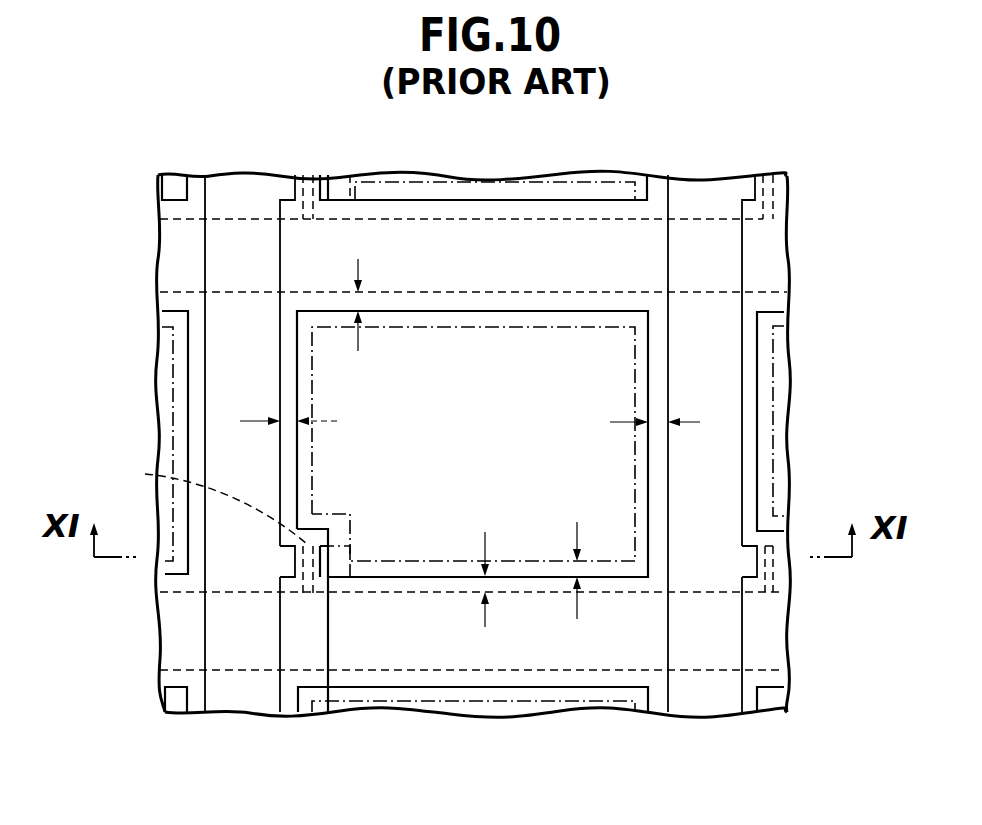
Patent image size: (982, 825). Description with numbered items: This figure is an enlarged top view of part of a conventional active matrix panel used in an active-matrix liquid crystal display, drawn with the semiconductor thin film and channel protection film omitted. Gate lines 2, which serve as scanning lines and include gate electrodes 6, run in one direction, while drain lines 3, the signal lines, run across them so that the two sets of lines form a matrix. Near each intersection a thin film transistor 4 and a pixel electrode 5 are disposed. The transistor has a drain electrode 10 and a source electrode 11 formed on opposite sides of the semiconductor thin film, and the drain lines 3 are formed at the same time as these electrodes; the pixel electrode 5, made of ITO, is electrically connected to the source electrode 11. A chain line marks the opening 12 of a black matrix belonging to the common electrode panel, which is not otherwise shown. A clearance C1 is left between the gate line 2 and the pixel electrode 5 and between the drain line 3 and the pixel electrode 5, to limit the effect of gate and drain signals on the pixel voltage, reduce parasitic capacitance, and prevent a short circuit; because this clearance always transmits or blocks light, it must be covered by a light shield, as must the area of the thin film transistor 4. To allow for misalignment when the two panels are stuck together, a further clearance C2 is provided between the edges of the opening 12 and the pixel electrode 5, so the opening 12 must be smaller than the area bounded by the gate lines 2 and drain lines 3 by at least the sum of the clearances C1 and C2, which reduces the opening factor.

The gate line 2 is at (770, 243).
The drain line 3 is at (226, 698).
The thin film transistor 4 is at (304, 598).
The pixel electrode 5 is at (643, 352).
The gate electrode 6 is at (215, 501).
The drain electrode 10 is at (283, 562).
The source electrode 11 is at (327, 645).
The opening of black matrix 12 is at (447, 325).
The clearance C1 is at (357, 303).
The clearance C2 is at (577, 568).